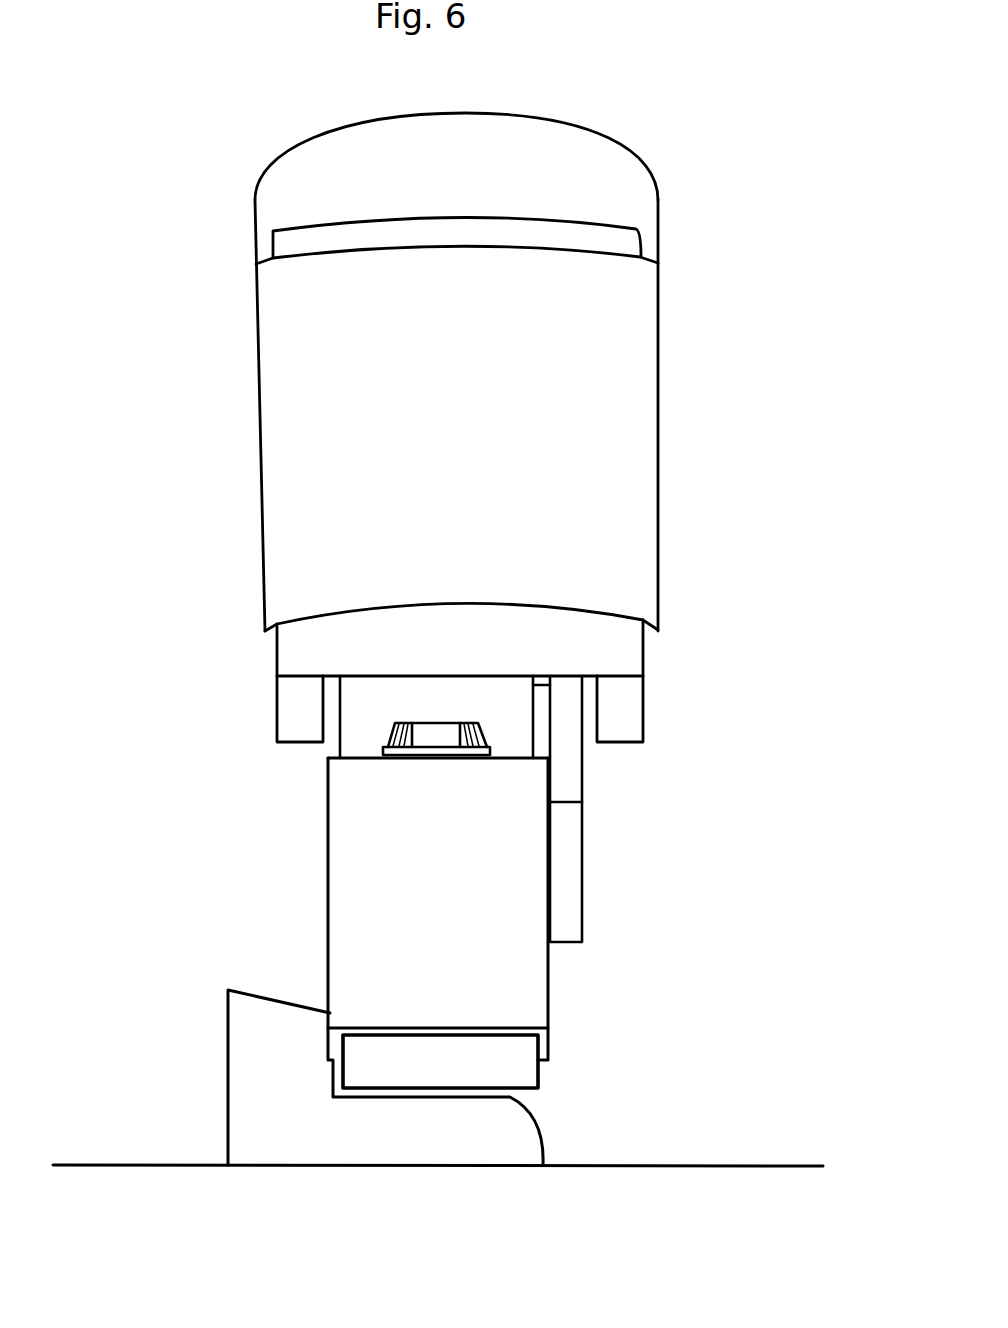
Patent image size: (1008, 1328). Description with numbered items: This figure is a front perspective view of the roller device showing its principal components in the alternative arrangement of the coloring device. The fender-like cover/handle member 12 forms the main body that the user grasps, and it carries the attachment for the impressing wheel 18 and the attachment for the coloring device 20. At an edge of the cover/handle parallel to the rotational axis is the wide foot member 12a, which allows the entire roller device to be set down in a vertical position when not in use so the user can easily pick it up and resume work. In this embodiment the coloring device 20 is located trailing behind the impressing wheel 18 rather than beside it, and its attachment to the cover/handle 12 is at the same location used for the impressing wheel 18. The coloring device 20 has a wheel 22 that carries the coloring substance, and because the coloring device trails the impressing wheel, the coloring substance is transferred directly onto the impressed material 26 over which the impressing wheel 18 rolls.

The cover/handle member 12 is at (565, 407).
The foot member 12a is at (645, 212).
The impressing wheel 18 is at (435, 704).
The coloring device 20 is at (468, 990).
The wheel 22 is at (485, 1073).
The material being impressed 26 is at (370, 1140).